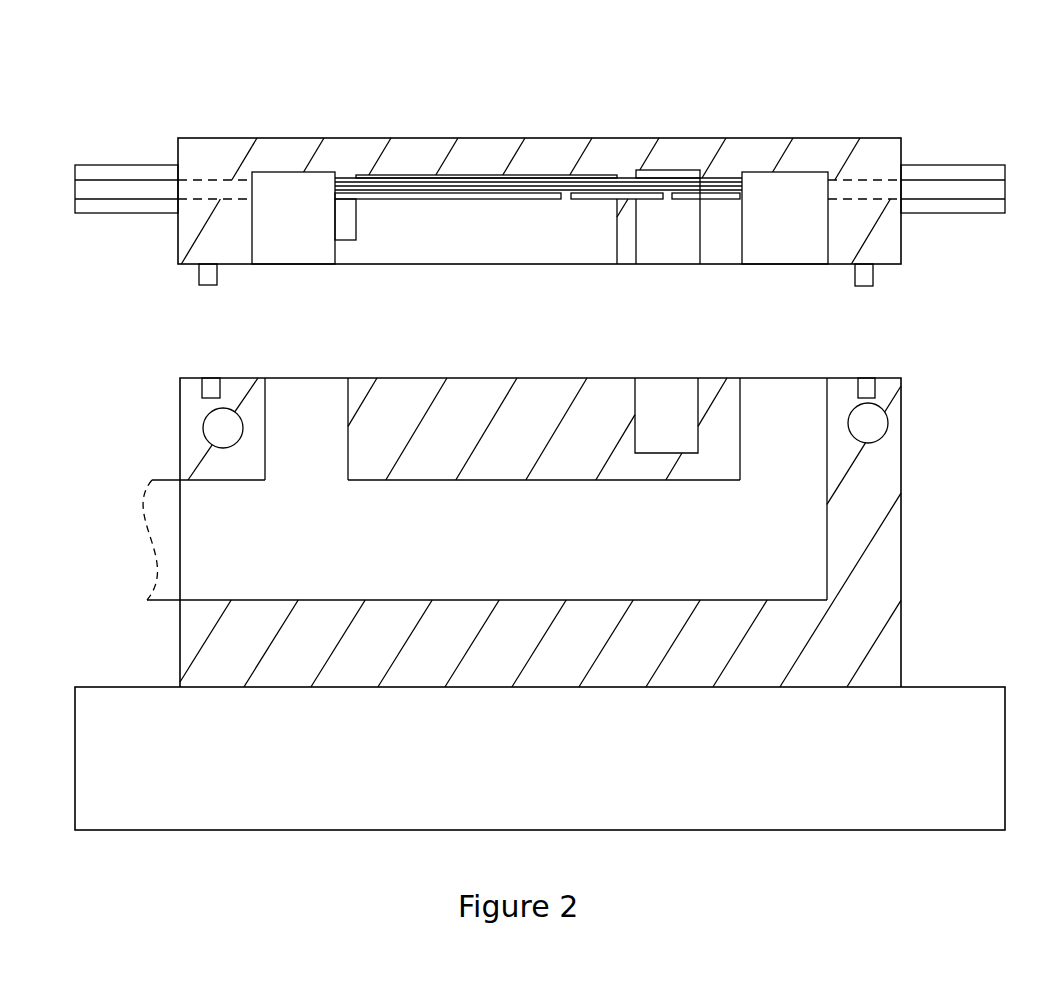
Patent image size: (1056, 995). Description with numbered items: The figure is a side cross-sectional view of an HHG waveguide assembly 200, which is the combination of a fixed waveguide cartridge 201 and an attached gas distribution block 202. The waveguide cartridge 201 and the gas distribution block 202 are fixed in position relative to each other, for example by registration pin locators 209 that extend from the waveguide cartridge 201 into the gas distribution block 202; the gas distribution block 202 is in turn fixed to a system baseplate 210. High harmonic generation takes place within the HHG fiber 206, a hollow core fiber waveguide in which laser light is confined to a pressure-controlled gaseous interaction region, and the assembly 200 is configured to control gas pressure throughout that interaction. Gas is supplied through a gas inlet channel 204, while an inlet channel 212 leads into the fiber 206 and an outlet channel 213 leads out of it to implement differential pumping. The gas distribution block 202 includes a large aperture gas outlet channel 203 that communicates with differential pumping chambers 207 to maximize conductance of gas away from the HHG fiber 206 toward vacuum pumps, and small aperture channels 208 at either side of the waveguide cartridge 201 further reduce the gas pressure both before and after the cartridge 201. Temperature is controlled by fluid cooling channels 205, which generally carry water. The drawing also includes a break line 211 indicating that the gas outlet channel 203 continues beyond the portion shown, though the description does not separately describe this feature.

The HHG waveguide assembly 200 is at (147, 35).
The fixed waveguide cartridge 201 is at (558, 177).
The gas distribution block 202 is at (580, 532).
The large aperture gas outlet channel 203 is at (487, 489).
The gas inlet channel 204 is at (658, 264).
The fluid cooling channels 205 is at (210, 424).
The HHG fiber 206 is at (478, 168).
The differential pumping chambers 207 is at (540, 218).
The small aperture channels 208 is at (177, 205).
The registration pin locators 209 is at (536, 293).
The system baseplate 210 is at (540, 782).
The break line (continuation of cavity) 211 is at (116, 540).
The inlet channel 212 is at (669, 177).
The outlet channel 213 is at (564, 177).